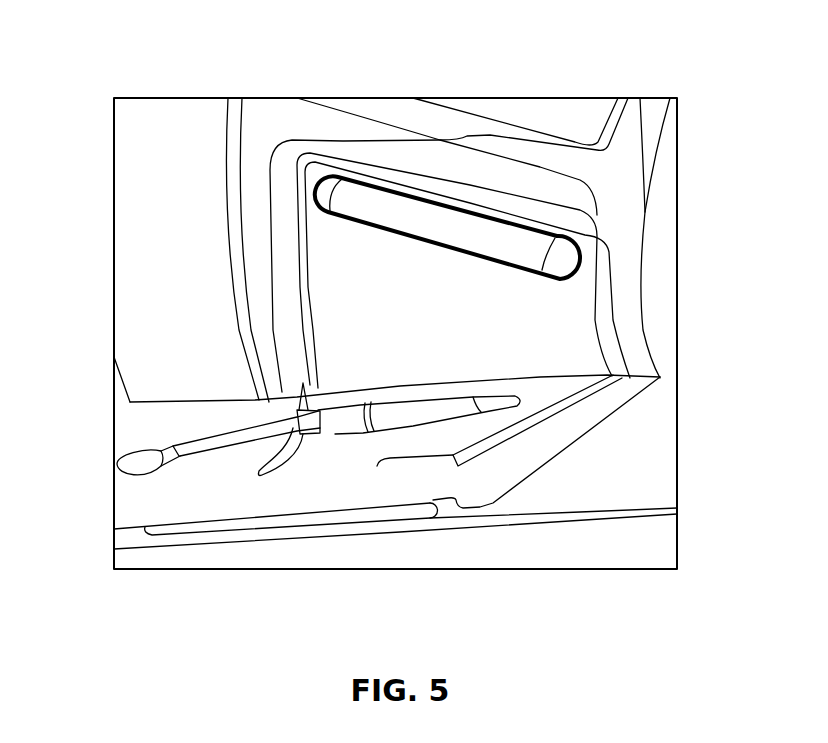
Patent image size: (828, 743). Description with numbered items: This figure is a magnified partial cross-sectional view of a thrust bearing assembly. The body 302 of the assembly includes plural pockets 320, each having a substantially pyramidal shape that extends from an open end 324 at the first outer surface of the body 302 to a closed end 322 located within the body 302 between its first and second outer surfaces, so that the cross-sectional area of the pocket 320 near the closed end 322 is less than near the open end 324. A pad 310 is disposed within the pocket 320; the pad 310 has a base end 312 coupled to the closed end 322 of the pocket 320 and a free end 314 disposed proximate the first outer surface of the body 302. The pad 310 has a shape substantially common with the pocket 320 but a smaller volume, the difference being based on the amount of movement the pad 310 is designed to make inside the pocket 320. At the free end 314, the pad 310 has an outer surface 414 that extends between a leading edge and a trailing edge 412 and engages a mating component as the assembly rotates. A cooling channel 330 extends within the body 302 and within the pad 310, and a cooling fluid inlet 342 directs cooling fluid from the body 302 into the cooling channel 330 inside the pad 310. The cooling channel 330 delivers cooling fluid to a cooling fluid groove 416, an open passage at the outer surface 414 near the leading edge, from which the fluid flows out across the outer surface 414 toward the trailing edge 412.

The body 302 is at (587, 437).
The pad 310 is at (565, 325).
The base end 312 is at (377, 463).
The free end 314 is at (587, 353).
The pocket 320 is at (601, 273).
The closed end 322 is at (402, 443).
The open end 324 is at (612, 218).
The cooling channel 330 is at (197, 443).
The cooling fluid inlet 342 is at (323, 430).
The trailing edge 412 is at (348, 388).
The outer surface 414 is at (313, 180).
The cooling fluid groove 416 is at (603, 242).